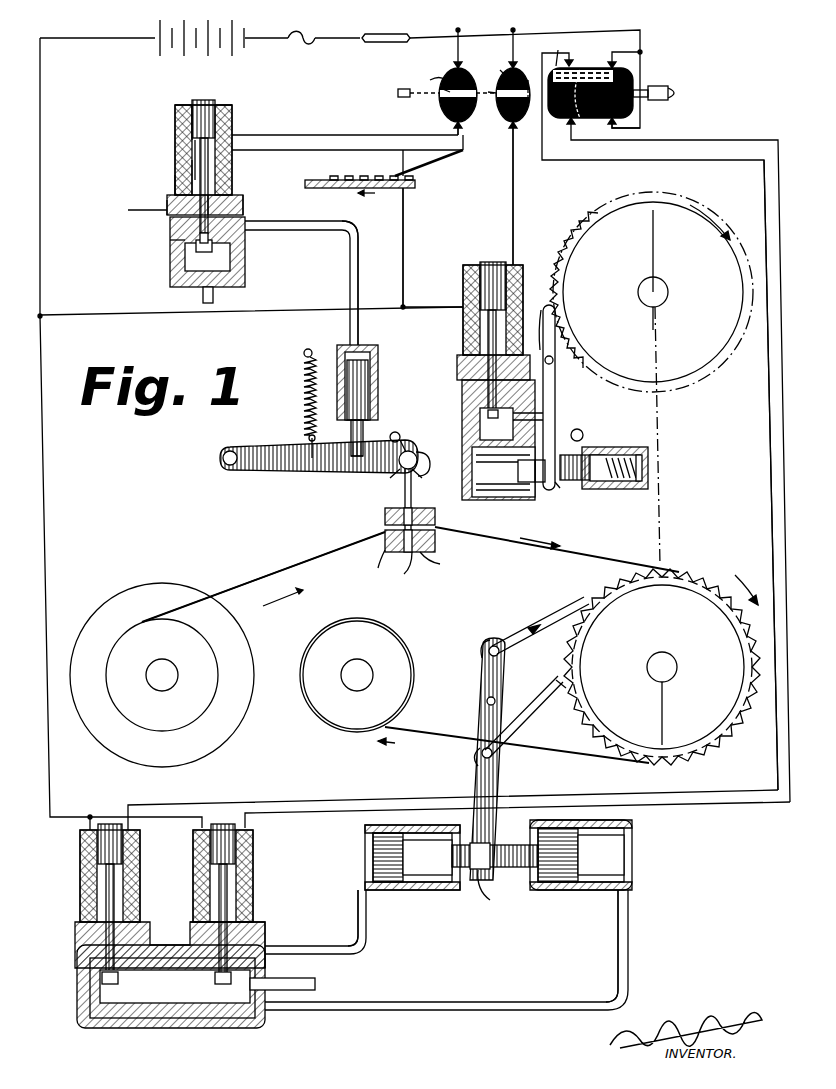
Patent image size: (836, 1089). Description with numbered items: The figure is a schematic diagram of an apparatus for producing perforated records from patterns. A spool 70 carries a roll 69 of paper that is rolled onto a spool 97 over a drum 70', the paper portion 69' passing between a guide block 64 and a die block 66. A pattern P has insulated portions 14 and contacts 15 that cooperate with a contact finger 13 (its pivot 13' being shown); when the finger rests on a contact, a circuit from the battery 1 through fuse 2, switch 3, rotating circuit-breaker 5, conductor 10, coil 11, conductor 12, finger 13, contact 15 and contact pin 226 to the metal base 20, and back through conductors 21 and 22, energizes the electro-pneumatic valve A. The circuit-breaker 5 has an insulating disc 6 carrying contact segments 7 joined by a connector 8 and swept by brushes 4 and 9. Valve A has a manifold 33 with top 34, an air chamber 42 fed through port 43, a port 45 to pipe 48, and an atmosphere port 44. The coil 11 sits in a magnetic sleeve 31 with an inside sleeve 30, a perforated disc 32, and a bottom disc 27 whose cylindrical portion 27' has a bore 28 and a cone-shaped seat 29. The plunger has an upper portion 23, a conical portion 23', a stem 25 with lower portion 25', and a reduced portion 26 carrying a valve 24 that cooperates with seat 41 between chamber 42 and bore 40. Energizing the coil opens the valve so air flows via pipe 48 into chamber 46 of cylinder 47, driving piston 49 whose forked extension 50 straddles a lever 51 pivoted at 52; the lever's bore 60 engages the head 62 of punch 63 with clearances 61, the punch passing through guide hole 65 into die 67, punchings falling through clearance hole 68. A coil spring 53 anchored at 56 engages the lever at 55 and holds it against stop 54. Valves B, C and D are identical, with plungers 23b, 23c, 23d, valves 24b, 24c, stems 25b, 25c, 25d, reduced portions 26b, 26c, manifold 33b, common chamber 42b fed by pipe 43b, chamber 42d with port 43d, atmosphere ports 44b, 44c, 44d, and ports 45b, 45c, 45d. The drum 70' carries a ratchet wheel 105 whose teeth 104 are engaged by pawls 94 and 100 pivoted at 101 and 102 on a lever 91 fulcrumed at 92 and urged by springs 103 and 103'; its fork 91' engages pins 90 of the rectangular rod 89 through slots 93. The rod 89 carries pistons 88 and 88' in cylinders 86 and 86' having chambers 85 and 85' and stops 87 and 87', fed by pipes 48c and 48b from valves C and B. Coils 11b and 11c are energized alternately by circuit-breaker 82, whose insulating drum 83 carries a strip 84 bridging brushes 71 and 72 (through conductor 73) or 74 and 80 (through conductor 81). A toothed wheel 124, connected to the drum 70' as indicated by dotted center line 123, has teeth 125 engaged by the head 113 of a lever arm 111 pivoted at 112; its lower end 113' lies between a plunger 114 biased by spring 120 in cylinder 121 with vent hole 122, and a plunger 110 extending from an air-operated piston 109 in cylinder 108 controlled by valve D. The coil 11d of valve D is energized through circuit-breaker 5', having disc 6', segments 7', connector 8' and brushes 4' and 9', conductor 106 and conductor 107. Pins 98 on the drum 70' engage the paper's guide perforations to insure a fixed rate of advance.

The battery 1 is at (160, 30).
The fuse 2 is at (300, 30).
The switch 3 is at (388, 32).
The contact brush 4 is at (447, 81).
The contact brush 4' is at (515, 146).
The rotating circuit-breaker 5 is at (428, 70).
The circuit-breaker 5' is at (487, 81).
The rotary disc 6 is at (432, 81).
The rotary disc 6' is at (501, 128).
The contact segment 7 is at (447, 86).
The contact segment 7' is at (534, 75).
The embedded connector 8 is at (435, 112).
The embedded connector 8' is at (497, 58).
The contact brush 9 is at (443, 125).
The contact brush 9' is at (521, 133).
The conductor 10 is at (342, 134).
The coil 11 is at (240, 125).
The coil 11b is at (140, 848).
The coil 11c is at (254, 850).
The coil 11d is at (465, 292).
The conductor 12 is at (290, 152).
The contact finger 13 is at (441, 155).
The contact finger pivot 13' is at (394, 141).
The insulated portion 14 is at (340, 178).
The contact 15 is at (376, 176).
The metal base 20 is at (410, 198).
The conductor 21 is at (118, 315).
The conductor 22 is at (160, 815).
The plunger upper cylindrical portion 23 is at (219, 104).
The plunger conical portion 23' is at (151, 124).
The plunger 23b is at (112, 824).
The plunger 23c is at (228, 824).
The plunger 23d is at (492, 262).
The valve 24 is at (196, 248).
The valve 24b is at (102, 978).
The valve 24c is at (220, 985).
The stem 25 is at (162, 150).
The stem lower portion 25' is at (126, 199).
The stem 25b is at (80, 890).
The stem 25c is at (254, 890).
The stem 25d is at (468, 340).
The reduced portion 26 is at (245, 214).
The reduced portion 26b is at (78, 950).
The reduced portion 26c is at (266, 930).
The disc 27 is at (147, 184).
The cylindrical portion 27' is at (165, 150).
The central bore 28 is at (210, 164).
The cone-shaped seat 29 is at (232, 132).
The inside sleeve 30 is at (176, 118).
The sleeve 31 is at (190, 178).
The perforated disc 32 is at (182, 105).
The manifold 33 is at (170, 228).
The manifold 33b is at (130, 1030).
The manifold top 34 is at (167, 202).
The central bore 40 is at (240, 198).
The valve seat 41 is at (168, 240).
The air chamber 42 is at (235, 262).
The common air chamber 42b is at (175, 986).
The air chamber 42d is at (490, 425).
The port 43 is at (214, 301).
The pipe 43b is at (316, 984).
The port 43d is at (545, 412).
The port 44 is at (135, 211).
The port 44b is at (150, 940).
The port 44c is at (188, 918).
The port 44d is at (457, 370).
The port 45 is at (258, 232).
The port 45b is at (186, 1018).
The port 45c is at (266, 960).
The port 45d is at (462, 405).
The chamber 46 is at (378, 350).
The cylinder 47 is at (370, 378).
The pipe 48 is at (357, 236).
The pipe 48b is at (408, 1012).
The pipe 48c is at (368, 940).
The piston 49 is at (362, 398).
The forked extension 50 is at (355, 470).
The lever 51 is at (295, 478).
The pivot 52 is at (226, 466).
The coil spring 53 is at (304, 398).
The stop 54 is at (405, 431).
The spring engagement point 55 is at (306, 450).
The spring anchor 56 is at (304, 350).
The bore 60 is at (418, 458).
The clearance 61 is at (395, 480).
The punch head 62 is at (430, 466).
The punch 63 is at (414, 494).
The guide block 64 is at (436, 525).
The guide hole 65 is at (385, 530).
The die block 66 is at (379, 568).
The die 67 is at (408, 572).
The clearance hole 68 is at (444, 562).
The roll of paper 69 is at (245, 631).
The paper portion 69' is at (263, 571).
The spool 70 is at (180, 675).
The drum 70' is at (729, 572).
The contact brush 71 is at (612, 60).
The contact brush 72 is at (572, 60).
The conductor 73 is at (708, 196).
The contact brush 74 is at (608, 120).
The contact brush 80 is at (571, 130).
The conductor 81 is at (774, 404).
The circuit-breaker 82 is at (650, 102).
The drum 83 is at (630, 72).
The conductive strip 84 is at (555, 48).
The chamber 85 is at (389, 862).
The chamber 85' is at (630, 856).
The cylinder 86 is at (401, 875).
The cylinder 86' is at (564, 872).
The stop 87 is at (394, 857).
The stop 87' is at (602, 855).
The piston 88 is at (412, 830).
The piston 88' is at (581, 830).
The rectangular rod 89 is at (510, 870).
The pin 90 is at (476, 870).
The lever 91 is at (466, 759).
The fork 91' is at (481, 908).
The fulcrum 92 is at (486, 700).
The slot 93 is at (488, 845).
The pawl 94 is at (545, 612).
The spool 97 is at (322, 696).
The pin 98 is at (680, 565).
The pawl 100 is at (524, 700).
The pivot 101 is at (500, 652).
The pivot 102 is at (494, 756).
The spring 103 is at (499, 630).
The spring 103' is at (454, 758).
The teeth 104 is at (566, 708).
The ratchet wheel 105 is at (557, 549).
The conductor 106 is at (513, 200).
The conductor 107 is at (430, 310).
The cylinder 108 is at (476, 497).
The piston 109 is at (524, 495).
The plunger 110 is at (542, 485).
The lever arm 111 is at (556, 396).
The pivot 112 is at (553, 365).
The tooth shaped head 113 is at (541, 309).
The lever lower end 113' is at (585, 498).
The plunger 114 is at (588, 462).
The spring 120 is at (622, 455).
The cylinder 121 is at (628, 489).
The vent hole 122 is at (648, 466).
The dotted center line 123 is at (662, 430).
The toothed wheel 124 is at (655, 210).
The teeth 125 is at (566, 230).
The contact pin 226 is at (351, 202).
The electro-pneumatic valve A is at (240, 100).
The electro-pneumatic valve B is at (78, 856).
The electro-pneumatic valve C is at (258, 856).
The electro-pneumatic valve D is at (468, 262).
The pattern P is at (450, 160).